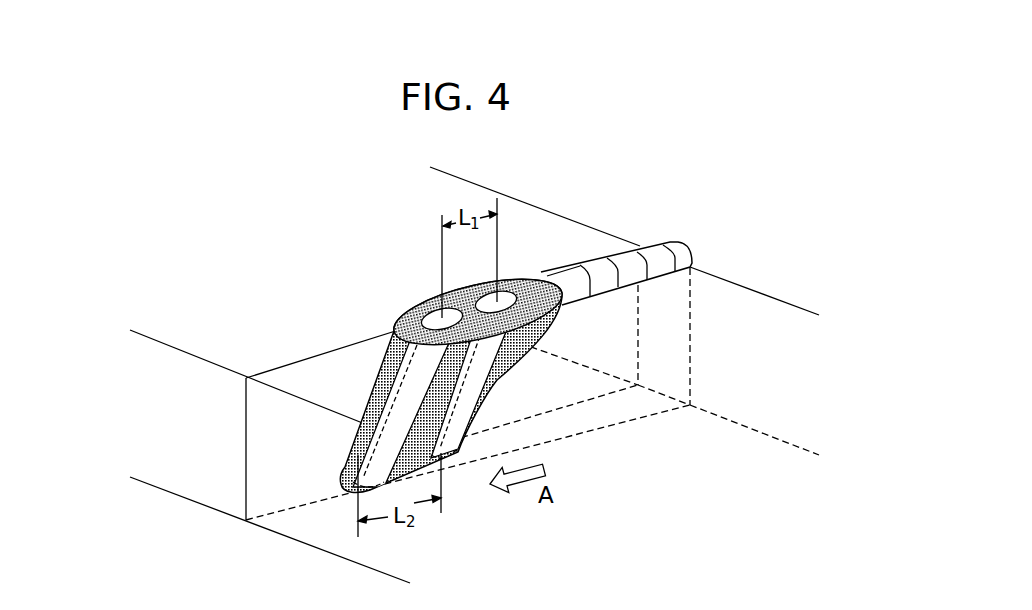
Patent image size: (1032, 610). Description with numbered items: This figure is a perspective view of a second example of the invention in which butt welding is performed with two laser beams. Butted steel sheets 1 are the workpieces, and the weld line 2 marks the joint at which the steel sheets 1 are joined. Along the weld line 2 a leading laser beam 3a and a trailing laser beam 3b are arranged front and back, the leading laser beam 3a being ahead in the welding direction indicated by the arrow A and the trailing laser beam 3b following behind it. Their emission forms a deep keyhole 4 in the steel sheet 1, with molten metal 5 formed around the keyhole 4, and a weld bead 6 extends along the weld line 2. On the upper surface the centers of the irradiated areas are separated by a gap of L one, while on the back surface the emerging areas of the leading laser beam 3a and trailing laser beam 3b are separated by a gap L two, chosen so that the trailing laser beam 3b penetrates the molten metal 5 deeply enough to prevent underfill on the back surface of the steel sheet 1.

The steel sheet 1 is at (178, 350).
The weld line 2 is at (313, 357).
The leading laser beam 3a is at (482, 236).
The trailing laser beam 3b is at (522, 210).
The keyhole 4 is at (468, 404).
The molten metal 5 is at (490, 333).
The weld bead 6 is at (673, 245).